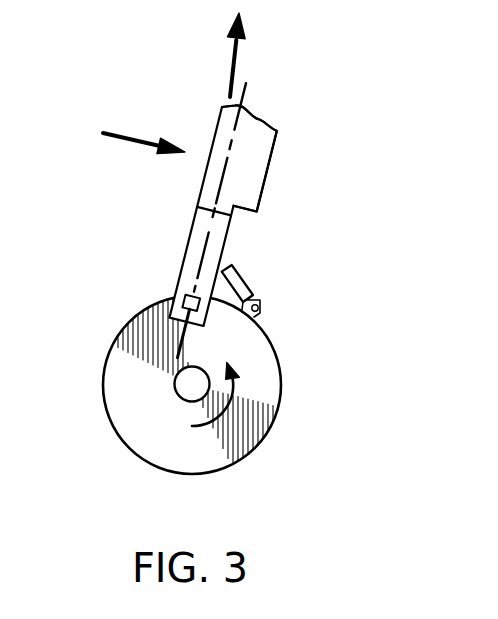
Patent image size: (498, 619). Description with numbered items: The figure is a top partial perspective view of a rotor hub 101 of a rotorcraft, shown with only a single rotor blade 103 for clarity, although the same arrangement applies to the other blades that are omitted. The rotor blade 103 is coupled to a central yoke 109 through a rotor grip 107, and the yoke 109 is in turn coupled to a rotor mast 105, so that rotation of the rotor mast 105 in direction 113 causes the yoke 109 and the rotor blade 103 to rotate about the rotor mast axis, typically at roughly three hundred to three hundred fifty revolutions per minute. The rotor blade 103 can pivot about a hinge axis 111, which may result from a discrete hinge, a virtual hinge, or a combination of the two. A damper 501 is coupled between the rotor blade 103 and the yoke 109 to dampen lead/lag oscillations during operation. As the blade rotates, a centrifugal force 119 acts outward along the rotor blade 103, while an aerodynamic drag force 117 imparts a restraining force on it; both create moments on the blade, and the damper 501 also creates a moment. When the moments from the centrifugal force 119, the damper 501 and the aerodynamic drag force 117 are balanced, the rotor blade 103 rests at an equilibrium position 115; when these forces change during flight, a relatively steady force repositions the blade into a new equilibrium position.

The rotor hub 101 is at (85, 300).
The rotor blade 103 is at (268, 127).
The rotor mast 105 is at (178, 404).
The rotor grip 107 is at (189, 240).
The yoke 109 is at (273, 347).
The hinge axis 111 is at (184, 300).
The direction of rotation 113 is at (204, 425).
The equilibrium position 115 is at (232, 143).
The aerodynamic drag force 117 is at (132, 141).
The centrifugal force 119 is at (230, 63).
The damper 501 is at (257, 272).